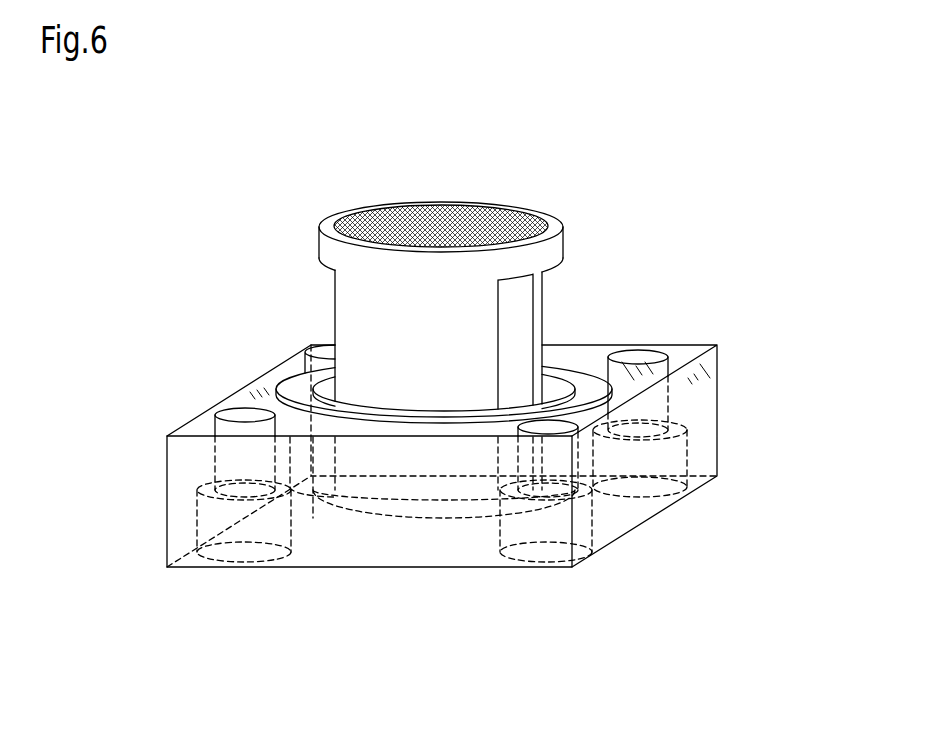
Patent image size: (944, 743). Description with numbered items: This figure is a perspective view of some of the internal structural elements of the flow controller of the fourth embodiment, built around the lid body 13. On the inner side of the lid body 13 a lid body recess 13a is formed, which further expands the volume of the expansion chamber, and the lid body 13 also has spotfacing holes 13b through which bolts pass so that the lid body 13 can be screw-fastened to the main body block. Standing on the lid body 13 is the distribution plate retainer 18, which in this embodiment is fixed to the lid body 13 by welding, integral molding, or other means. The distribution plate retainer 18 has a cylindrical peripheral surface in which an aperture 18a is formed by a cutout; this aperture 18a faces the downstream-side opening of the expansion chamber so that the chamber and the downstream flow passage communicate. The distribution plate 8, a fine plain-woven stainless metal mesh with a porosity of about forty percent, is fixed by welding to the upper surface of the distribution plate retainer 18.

The distribution plate 8 is at (470, 202).
The distribution plate retainer 18 is at (572, 240).
The aperture 18a is at (543, 290).
The lid body 13 is at (728, 397).
The lid body recess 13a is at (545, 358).
The spotfacing hole 13b is at (656, 490).